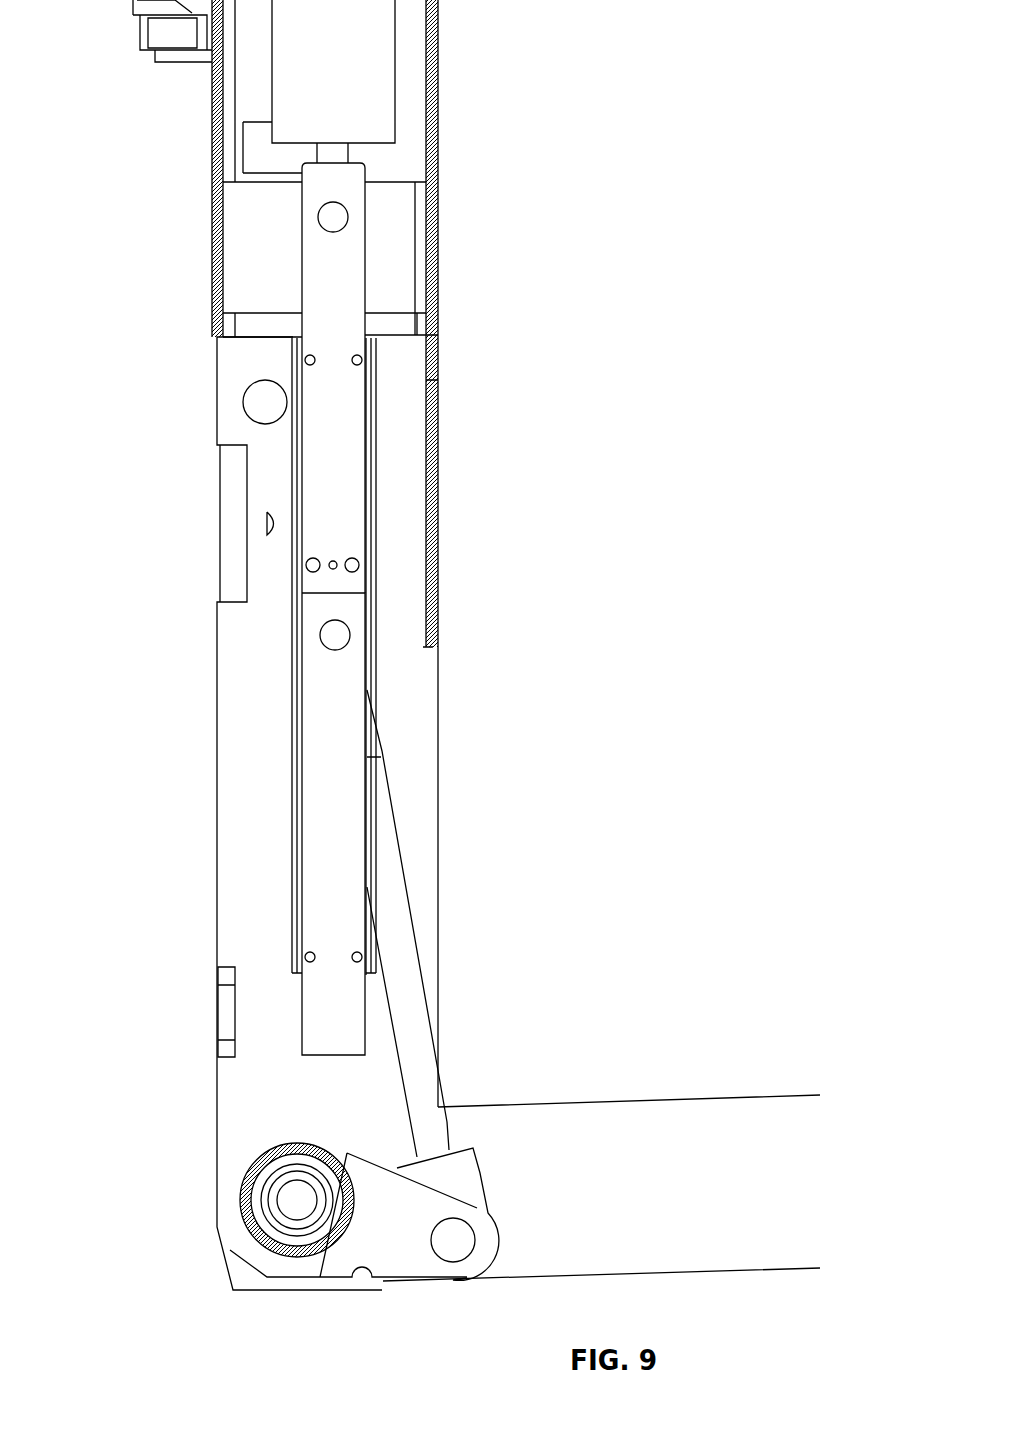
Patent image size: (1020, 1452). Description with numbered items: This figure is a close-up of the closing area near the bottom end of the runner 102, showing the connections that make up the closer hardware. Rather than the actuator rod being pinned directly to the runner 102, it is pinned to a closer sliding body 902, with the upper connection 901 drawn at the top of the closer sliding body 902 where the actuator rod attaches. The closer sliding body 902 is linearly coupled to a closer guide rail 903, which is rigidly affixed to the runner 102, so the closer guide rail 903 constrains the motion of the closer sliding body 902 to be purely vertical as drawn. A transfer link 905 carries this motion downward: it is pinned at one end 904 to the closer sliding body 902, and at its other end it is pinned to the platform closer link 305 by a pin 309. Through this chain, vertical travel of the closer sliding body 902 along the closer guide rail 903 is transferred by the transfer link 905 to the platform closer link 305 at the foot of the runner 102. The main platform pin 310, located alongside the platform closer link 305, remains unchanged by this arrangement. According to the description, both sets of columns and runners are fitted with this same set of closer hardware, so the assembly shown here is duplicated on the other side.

The runner 102 is at (222, 812).
The upper pivot pin 901 is at (333, 217).
The closer sliding body 902 is at (325, 703).
The closer guide rail 903 is at (377, 483).
The end of transfer link 904 is at (335, 635).
The transfer link 905 is at (390, 920).
The platform closer link 305 is at (387, 1220).
The pin 309 is at (457, 1237).
The main platform pin 310 is at (278, 1213).